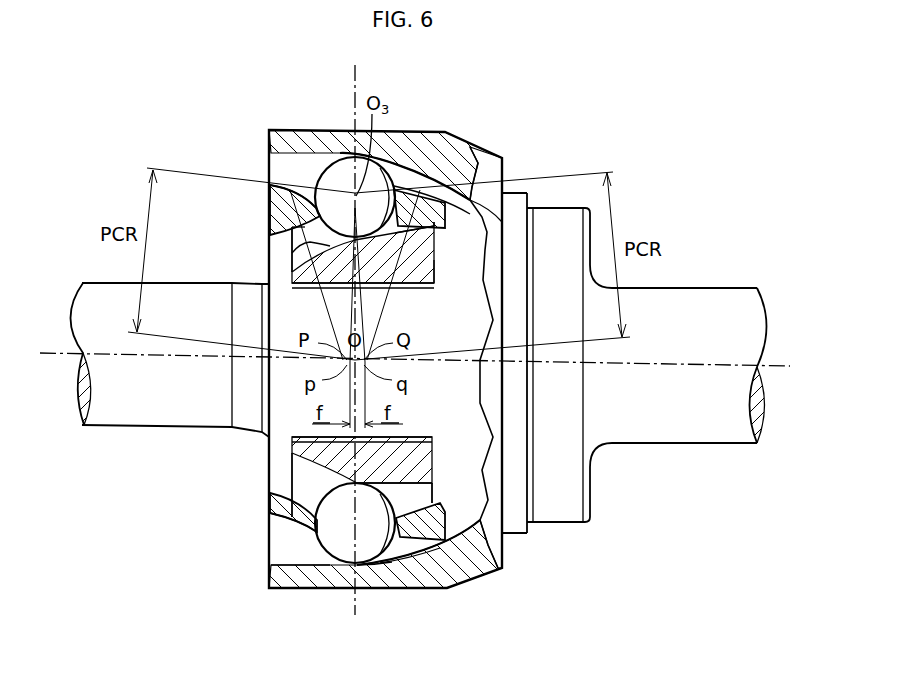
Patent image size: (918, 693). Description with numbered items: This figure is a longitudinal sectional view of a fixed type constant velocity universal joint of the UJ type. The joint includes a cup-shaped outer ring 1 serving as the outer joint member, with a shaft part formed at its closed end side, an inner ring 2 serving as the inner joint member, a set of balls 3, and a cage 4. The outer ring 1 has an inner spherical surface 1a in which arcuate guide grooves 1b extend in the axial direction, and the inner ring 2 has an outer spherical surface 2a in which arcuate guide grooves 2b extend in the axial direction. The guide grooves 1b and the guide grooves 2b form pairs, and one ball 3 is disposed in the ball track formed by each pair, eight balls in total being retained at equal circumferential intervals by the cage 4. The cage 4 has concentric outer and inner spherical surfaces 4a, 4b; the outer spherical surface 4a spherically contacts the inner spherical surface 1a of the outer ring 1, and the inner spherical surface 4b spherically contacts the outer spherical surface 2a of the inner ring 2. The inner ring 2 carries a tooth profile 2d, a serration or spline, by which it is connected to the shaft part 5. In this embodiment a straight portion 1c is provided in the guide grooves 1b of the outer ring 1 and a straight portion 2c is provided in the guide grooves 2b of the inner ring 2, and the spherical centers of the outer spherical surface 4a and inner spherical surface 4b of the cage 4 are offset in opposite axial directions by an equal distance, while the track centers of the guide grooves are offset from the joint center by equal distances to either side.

The outer ring 1 is at (267, 138).
The inner spherical surface 1a is at (417, 560).
The guide grooves 1b is at (388, 560).
The straight portion 1c is at (296, 558).
The inner ring 2 is at (288, 236).
The outer spherical surface 2a is at (440, 545).
The guide grooves 2b is at (292, 254).
The straight portion 2c is at (414, 222).
The tooth profile 2d is at (418, 292).
The balls 3 is at (330, 158).
The cage 4 is at (419, 182).
The outer spherical surface 4a is at (295, 525).
The inner spherical surface 4b is at (290, 490).
The shaft part 5 is at (92, 287).